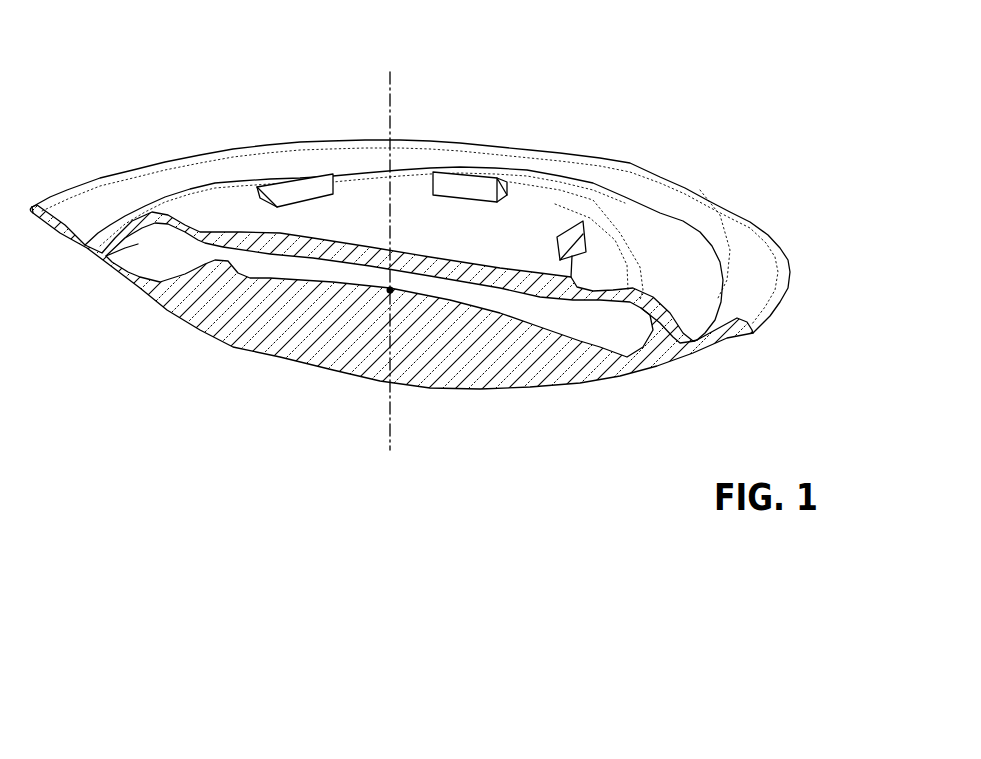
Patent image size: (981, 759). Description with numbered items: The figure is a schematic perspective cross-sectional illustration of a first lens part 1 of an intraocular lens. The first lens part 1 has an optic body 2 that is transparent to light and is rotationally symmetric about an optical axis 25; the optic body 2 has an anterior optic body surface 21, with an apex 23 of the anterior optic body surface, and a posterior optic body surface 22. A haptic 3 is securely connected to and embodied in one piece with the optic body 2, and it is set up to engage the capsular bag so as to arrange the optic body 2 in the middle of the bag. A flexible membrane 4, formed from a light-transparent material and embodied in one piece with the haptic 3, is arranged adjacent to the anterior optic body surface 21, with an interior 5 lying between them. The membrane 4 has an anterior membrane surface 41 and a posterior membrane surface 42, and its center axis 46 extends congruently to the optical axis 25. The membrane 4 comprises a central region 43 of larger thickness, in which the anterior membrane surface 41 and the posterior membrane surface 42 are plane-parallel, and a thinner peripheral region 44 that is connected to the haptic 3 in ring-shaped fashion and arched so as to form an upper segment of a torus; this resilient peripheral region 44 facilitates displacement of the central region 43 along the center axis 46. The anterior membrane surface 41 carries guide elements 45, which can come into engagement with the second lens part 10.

The first lens part 1 is at (697, 86).
The optic body 2 is at (277, 333).
The anterior optic body surface 21 is at (225, 268).
The posterior optic body surface 22 is at (222, 336).
The apex of the anterior optic body surface 23 is at (390, 290).
The optical axis of the optic body 25 is at (392, 88).
The haptic 3 is at (657, 365).
The membrane 4 is at (220, 190).
The anterior membrane surface 41 is at (530, 217).
The posterior membrane surface 42 is at (498, 290).
The central region of the membrane 43 is at (423, 228).
The peripheral region of the membrane 44 is at (668, 255).
The guide elements 45 is at (584, 223).
The center axis of the membrane 46 is at (390, 80).
The interior 5 is at (140, 245).
The second lens part 10 is at (634, 758).